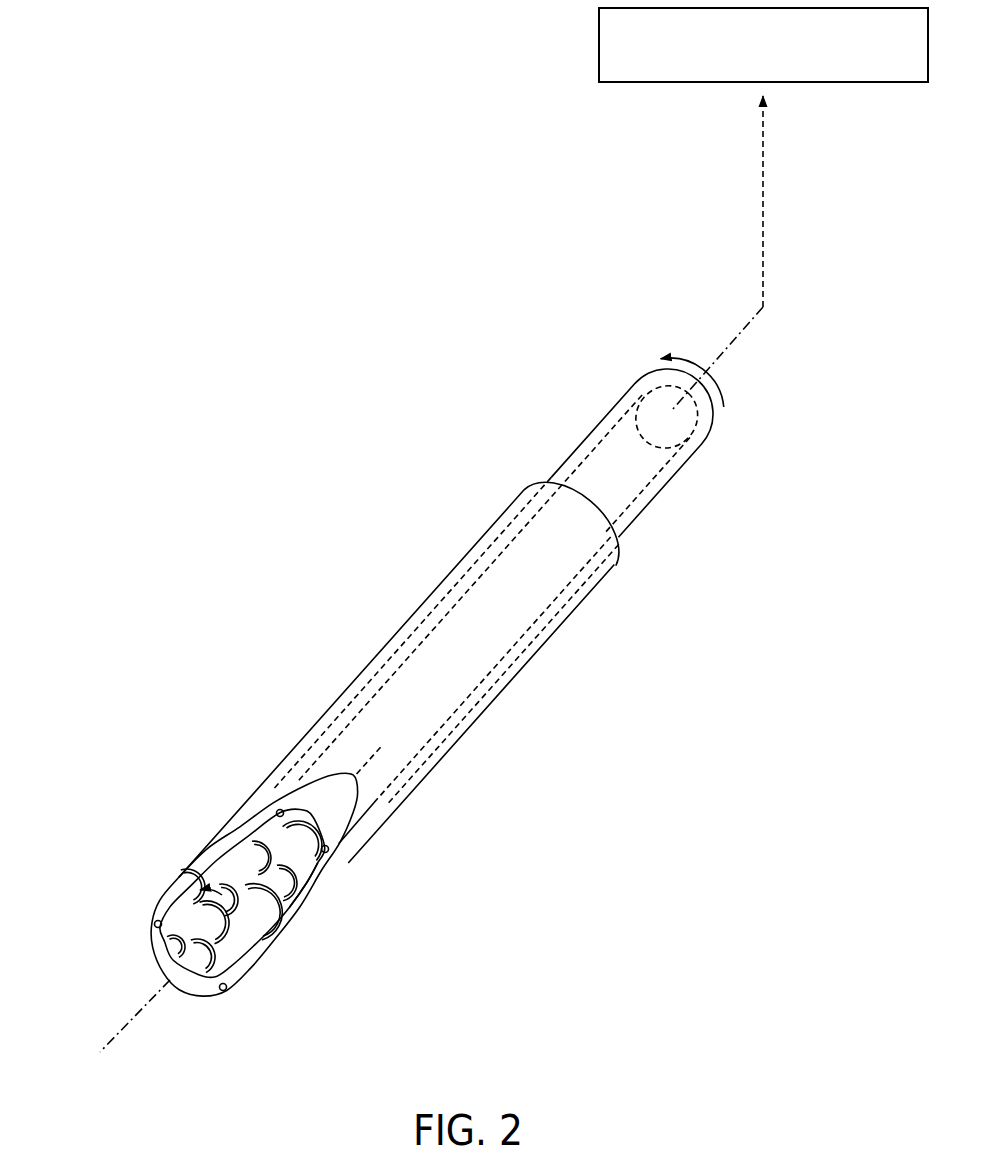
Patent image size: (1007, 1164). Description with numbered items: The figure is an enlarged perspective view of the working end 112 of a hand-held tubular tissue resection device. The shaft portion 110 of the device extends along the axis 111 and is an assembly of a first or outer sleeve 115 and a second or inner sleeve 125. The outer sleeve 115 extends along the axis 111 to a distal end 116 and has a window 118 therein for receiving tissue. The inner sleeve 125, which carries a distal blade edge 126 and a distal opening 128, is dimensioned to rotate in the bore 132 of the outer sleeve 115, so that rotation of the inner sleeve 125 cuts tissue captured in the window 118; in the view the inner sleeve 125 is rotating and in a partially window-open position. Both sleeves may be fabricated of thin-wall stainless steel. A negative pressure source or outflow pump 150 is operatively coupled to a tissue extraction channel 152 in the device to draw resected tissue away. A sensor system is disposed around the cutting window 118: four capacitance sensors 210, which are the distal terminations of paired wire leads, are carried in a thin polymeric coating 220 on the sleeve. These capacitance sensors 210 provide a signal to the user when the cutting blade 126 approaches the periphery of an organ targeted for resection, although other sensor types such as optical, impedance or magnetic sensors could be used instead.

The negative pressure source 150 is at (598, 47).
The shaft portion 110 is at (566, 390).
The tissue extraction channel 152 is at (653, 485).
The bore 132 is at (530, 640).
The working end 112 is at (206, 766).
The outer sleeve 115 is at (207, 853).
The window 118 is at (202, 879).
The distal end 116 is at (165, 903).
The capacitance sensors 210 is at (155, 927).
The distal opening 128 is at (164, 957).
The thin polymeric coating 220 is at (316, 878).
The distal blade edge 126 is at (278, 894).
The inner sleeve 125 is at (258, 933).
The axis 111 is at (123, 1027).